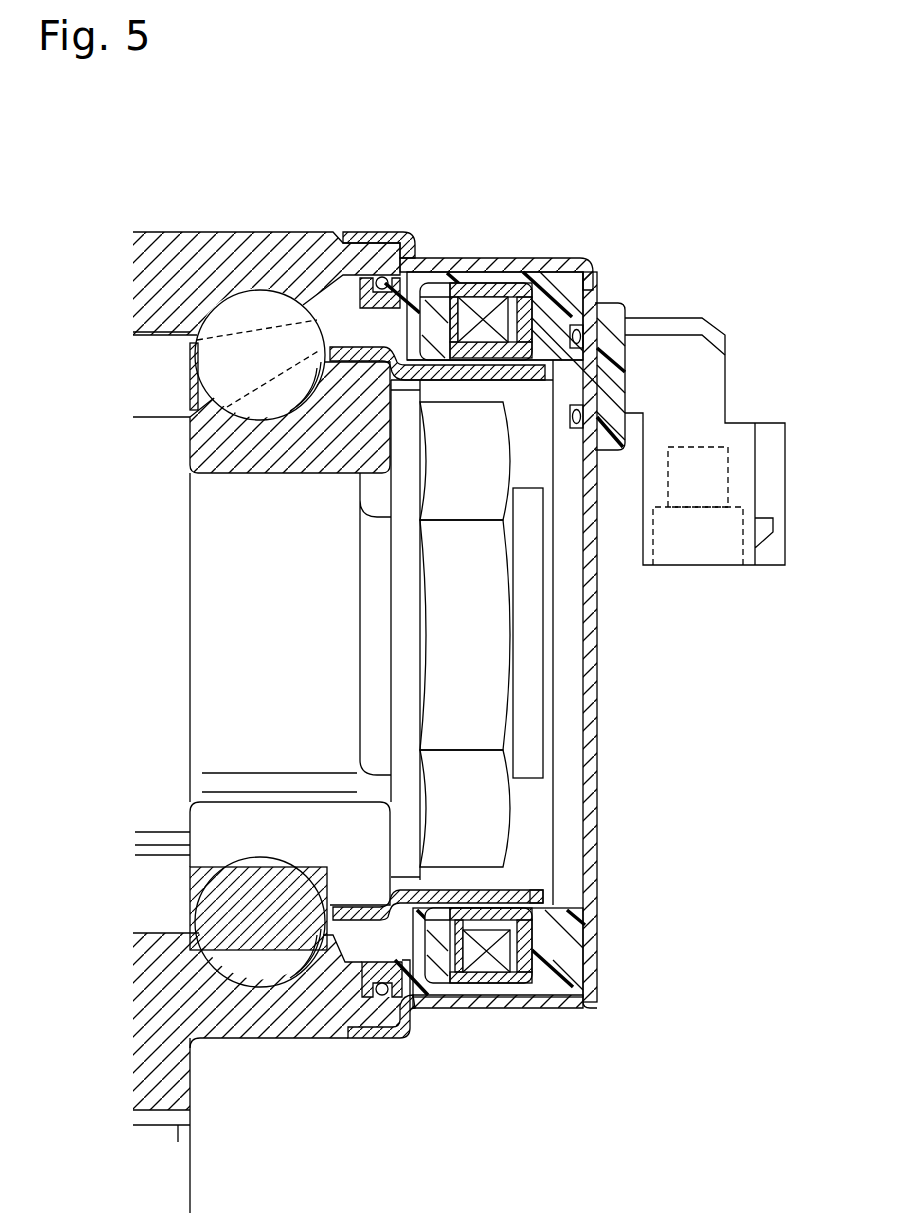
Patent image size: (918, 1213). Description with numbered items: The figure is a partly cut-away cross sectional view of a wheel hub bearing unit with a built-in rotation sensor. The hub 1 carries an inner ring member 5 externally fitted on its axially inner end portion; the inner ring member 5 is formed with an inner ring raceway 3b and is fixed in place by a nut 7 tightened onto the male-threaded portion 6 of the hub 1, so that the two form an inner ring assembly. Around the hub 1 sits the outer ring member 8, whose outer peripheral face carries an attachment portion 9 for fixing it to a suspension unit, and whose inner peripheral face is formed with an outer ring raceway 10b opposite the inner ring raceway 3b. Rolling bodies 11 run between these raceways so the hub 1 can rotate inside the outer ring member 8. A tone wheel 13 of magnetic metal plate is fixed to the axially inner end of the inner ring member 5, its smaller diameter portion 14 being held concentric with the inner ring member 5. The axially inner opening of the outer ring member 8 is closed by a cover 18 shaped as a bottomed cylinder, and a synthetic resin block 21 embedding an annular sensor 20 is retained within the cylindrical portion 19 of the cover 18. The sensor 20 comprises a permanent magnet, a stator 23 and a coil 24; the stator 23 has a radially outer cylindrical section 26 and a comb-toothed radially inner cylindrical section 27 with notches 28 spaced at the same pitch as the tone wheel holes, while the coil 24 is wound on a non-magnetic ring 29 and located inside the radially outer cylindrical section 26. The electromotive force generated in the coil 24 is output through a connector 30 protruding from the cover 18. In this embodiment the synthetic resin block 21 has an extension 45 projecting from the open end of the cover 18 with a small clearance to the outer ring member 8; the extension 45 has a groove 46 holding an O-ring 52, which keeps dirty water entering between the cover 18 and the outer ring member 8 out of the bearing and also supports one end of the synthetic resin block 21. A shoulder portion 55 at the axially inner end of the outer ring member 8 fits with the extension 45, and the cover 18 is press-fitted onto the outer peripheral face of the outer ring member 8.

The hub 1 is at (190, 668).
The inner ring raceway 3b is at (245, 858).
The inner ring member 5 is at (268, 462).
The male-threaded portion 6 is at (375, 693).
The nut 7 is at (495, 640).
The outer ring member 8 is at (212, 238).
The attachment portion 9 is at (185, 1103).
The outer ring raceway 10b is at (275, 975).
The rolling bodies 11 is at (257, 408).
The tone wheel 13 is at (497, 888).
The smaller diameter portion 14 is at (545, 895).
The cover 18 is at (592, 572).
The cylindrical portion 19 is at (532, 262).
The annular sensor 20 is at (487, 975).
The synthetic resin block 21 is at (588, 1005).
The stator 23 is at (530, 318).
The coil 24 is at (500, 316).
The radially outer cylindrical section 26 is at (475, 290).
The radially inner cylindrical section 27 is at (510, 912).
The notches 28 is at (507, 355).
The non-magnetic ring 29 is at (515, 935).
The connector 30 is at (712, 392).
The extension 45 is at (365, 1000).
The groove 46 is at (405, 1002).
The O-ring 52 is at (400, 262).
The shoulder portion 55 is at (378, 280).